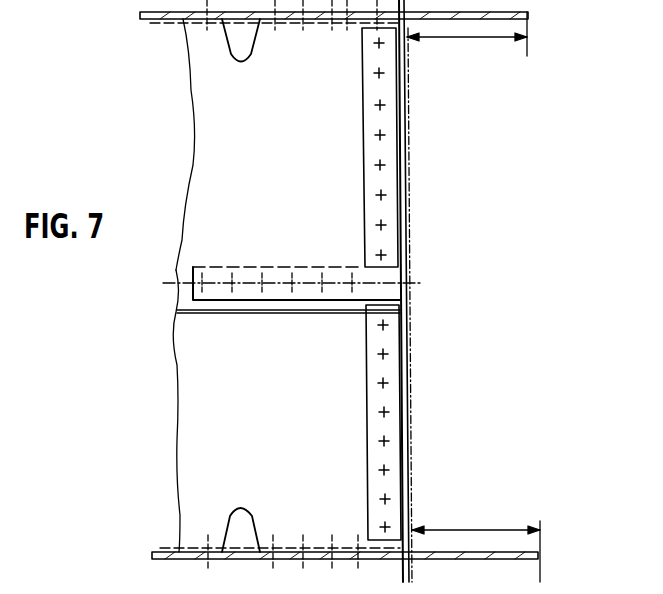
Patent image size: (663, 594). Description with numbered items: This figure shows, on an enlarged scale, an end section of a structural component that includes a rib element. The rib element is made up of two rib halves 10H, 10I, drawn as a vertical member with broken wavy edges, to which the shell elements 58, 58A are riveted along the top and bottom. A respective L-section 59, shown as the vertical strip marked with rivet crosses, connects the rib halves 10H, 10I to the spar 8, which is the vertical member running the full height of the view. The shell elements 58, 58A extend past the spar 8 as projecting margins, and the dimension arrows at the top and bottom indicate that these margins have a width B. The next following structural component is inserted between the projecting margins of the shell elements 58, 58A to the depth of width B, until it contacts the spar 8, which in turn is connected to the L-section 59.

The spar 8 is at (407, 143).
The shell element 58 is at (178, 22).
The shell element 58A is at (163, 552).
The L-section 59 is at (362, 62).
The rib half 10H is at (200, 131).
The rib half 10I is at (200, 391).
The width B is at (458, 38).